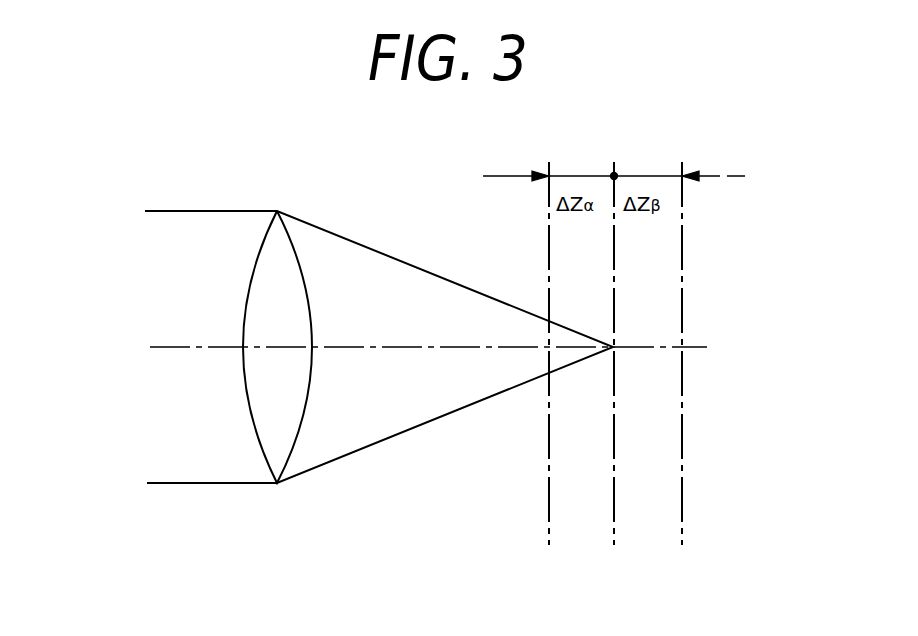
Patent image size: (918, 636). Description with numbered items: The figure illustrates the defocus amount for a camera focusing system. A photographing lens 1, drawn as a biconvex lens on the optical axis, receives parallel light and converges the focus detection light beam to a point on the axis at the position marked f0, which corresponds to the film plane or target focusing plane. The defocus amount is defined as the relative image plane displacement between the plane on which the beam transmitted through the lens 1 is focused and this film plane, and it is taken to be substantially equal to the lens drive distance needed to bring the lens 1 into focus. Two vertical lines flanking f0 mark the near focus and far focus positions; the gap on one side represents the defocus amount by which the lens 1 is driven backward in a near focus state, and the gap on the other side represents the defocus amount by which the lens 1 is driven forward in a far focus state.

The photographing lens 1 is at (248, 293).
The nominal focal position f0 is at (613, 338).